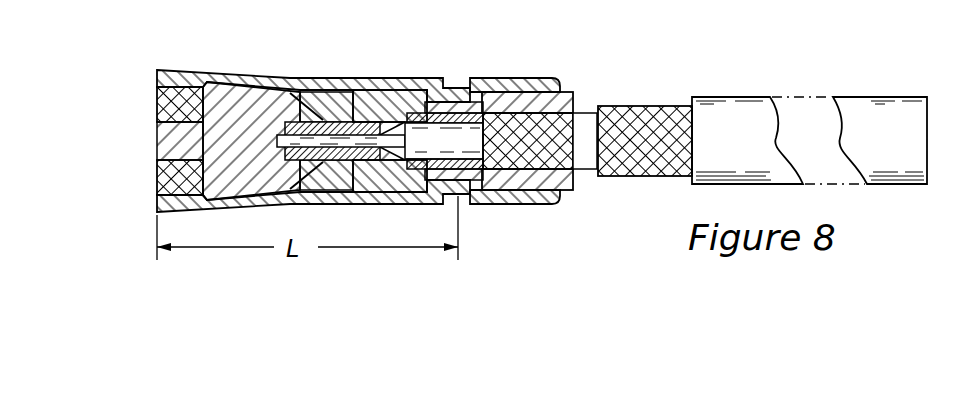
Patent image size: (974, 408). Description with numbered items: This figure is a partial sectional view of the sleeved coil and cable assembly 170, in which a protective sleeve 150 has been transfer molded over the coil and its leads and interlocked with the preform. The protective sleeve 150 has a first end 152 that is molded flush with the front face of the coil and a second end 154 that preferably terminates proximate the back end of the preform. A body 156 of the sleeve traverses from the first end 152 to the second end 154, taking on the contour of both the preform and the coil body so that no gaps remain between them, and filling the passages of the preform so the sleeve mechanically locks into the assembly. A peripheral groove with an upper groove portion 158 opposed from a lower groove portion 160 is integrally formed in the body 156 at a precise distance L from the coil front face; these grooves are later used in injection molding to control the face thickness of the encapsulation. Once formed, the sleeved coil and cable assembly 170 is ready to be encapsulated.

The protective sleeve 150 is at (242, 73).
The first end 152 is at (157, 80).
The second end 154 is at (557, 80).
The body 156 is at (367, 77).
The upper groove portion 158 is at (460, 93).
The lower groove portion 160 is at (460, 192).
The sleeved coil and cable assembly 170 is at (458, 48).